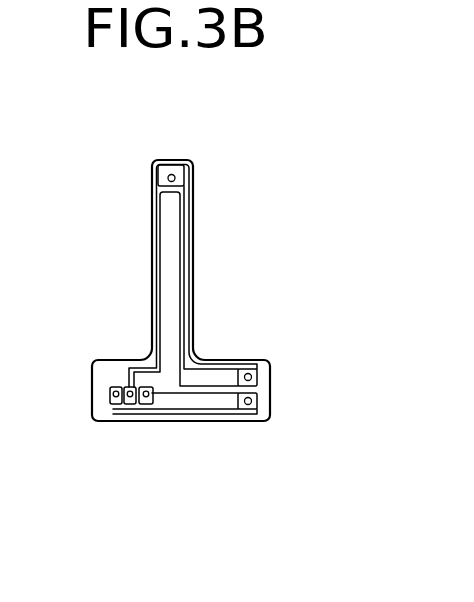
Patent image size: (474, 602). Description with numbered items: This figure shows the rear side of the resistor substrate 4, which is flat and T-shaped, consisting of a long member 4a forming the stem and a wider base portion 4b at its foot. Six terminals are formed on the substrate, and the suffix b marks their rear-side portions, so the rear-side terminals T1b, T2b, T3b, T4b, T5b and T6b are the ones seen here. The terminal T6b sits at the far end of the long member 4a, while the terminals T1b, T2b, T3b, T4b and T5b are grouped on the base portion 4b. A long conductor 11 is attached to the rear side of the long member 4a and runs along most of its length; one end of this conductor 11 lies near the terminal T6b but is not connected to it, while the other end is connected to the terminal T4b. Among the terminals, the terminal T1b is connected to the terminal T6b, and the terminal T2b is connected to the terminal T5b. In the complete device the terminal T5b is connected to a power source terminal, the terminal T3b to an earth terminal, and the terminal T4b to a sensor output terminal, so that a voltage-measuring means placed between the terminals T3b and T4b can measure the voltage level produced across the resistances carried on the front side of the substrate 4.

The resistor substrate 4 is at (265, 157).
The long member 4a is at (152, 268).
The base portion of circuit board 4b is at (93, 377).
The long conductor 11 is at (181, 258).
The terminal T1 rear side T1b is at (249, 375).
The terminal T2 rear side T2b is at (257, 402).
The terminal T3 rear side T3b is at (150, 404).
The terminal T4 rear side T4b is at (131, 405).
The terminal T5 rear side T5b is at (113, 405).
The terminal T6 rear side T6b is at (175, 175).